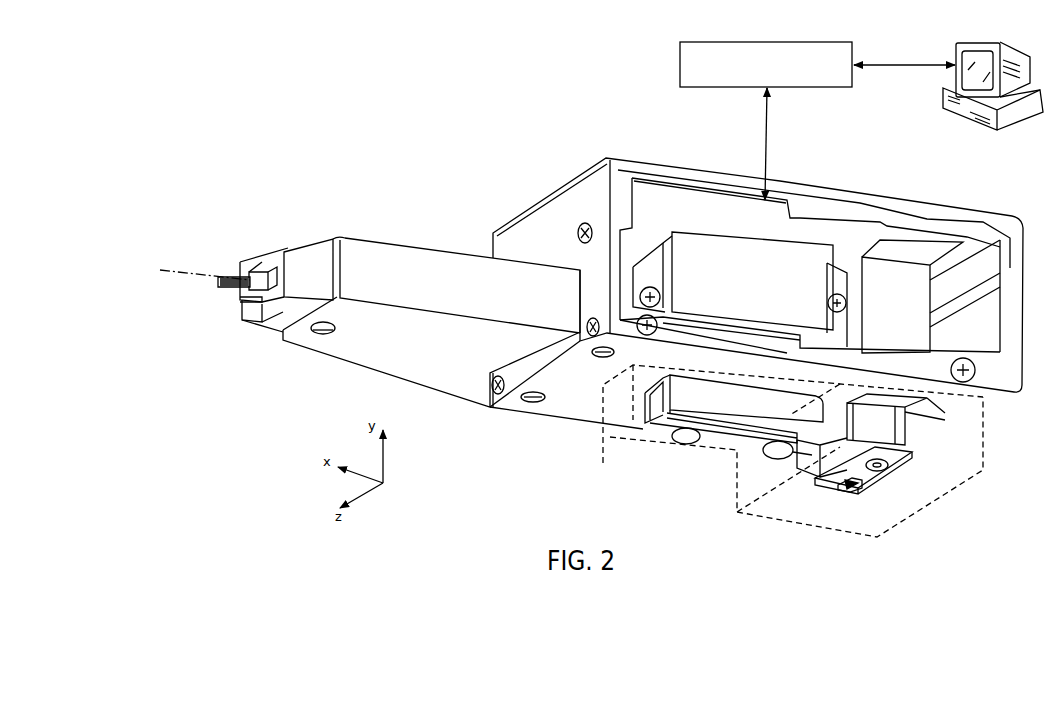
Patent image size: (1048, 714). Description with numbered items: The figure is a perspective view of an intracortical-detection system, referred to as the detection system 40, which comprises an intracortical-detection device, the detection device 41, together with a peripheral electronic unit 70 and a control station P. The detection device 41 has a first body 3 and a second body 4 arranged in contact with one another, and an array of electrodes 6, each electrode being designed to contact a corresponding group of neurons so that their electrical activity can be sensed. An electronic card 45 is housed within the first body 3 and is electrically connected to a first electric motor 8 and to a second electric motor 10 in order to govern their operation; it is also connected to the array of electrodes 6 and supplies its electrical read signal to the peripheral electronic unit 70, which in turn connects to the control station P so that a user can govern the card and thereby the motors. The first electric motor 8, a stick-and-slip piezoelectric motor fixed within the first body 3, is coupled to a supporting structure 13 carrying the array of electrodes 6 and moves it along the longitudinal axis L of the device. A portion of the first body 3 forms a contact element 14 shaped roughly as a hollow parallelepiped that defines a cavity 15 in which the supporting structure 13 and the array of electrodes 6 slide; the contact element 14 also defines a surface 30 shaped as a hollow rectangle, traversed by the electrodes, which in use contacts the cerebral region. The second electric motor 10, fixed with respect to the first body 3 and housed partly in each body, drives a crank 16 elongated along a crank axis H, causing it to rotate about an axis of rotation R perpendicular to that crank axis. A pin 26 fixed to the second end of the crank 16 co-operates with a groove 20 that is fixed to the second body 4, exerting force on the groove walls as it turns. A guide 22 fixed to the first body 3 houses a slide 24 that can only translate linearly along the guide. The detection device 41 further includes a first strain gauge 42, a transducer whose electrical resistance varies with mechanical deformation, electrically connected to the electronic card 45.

The first body 3 is at (627, 172).
The second body 4 is at (605, 458).
The array of electrodes 6 is at (235, 276).
The first electric motor 8 is at (800, 267).
The second electric motor 10 is at (888, 287).
The supporting structure 13 is at (260, 280).
The contact element 14 is at (302, 272).
The cavity 15 is at (244, 300).
The crank 16 is at (887, 440).
The groove 20 is at (847, 487).
The guide 22 is at (727, 400).
The slide 24 is at (657, 417).
The pin 26 is at (887, 473).
The surface 30 is at (253, 308).
The detection system 40 is at (470, 108).
The detection device 41 is at (540, 178).
The first strain gauge 42 is at (805, 460).
The electronic card 45 is at (813, 228).
The peripheral electronic unit 70 is at (680, 80).
The longitudinal axis L is at (170, 271).
The control station P is at (1013, 117).
The crank axis H is at (945, 402).
The axis of rotation R is at (850, 525).